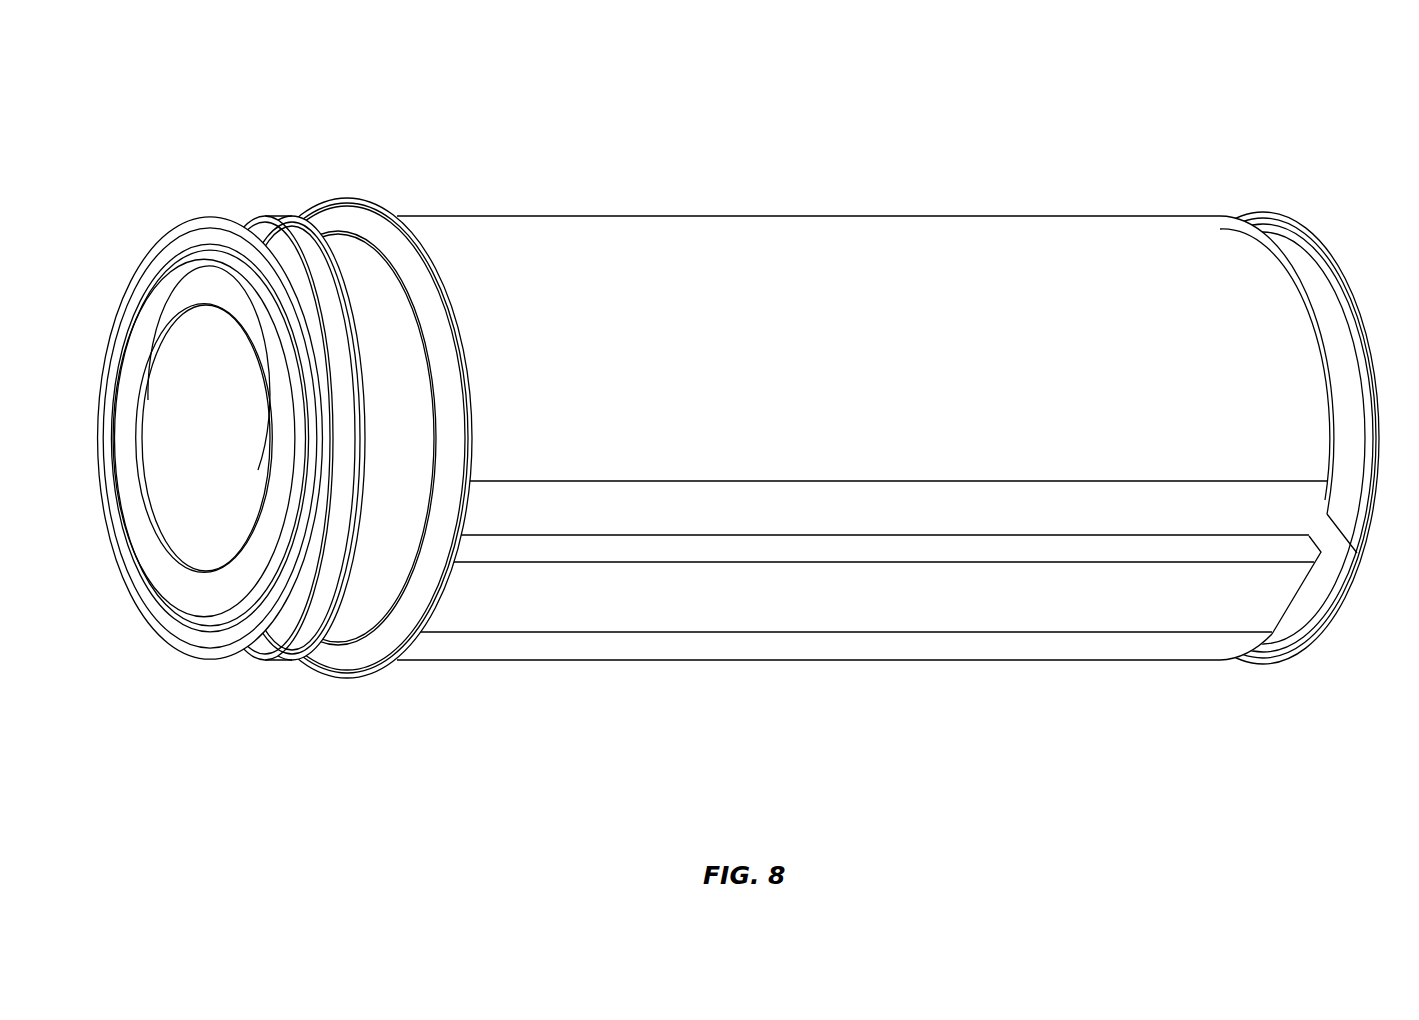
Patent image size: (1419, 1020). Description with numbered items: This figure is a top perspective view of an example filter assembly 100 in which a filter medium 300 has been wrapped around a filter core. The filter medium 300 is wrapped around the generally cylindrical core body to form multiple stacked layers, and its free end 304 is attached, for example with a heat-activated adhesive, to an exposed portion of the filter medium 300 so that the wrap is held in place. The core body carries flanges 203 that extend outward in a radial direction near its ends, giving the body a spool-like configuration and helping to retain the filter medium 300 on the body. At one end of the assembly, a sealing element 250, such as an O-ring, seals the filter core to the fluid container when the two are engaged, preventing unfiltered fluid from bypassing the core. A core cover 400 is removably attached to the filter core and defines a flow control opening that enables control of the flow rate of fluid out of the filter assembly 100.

The filter assembly 100 is at (754, 394).
The flanges 203 is at (1325, 617).
The sealing element 250 is at (292, 225).
The filter medium 300 is at (808, 216).
The free end 304 is at (915, 550).
The core cover 400 is at (188, 588).